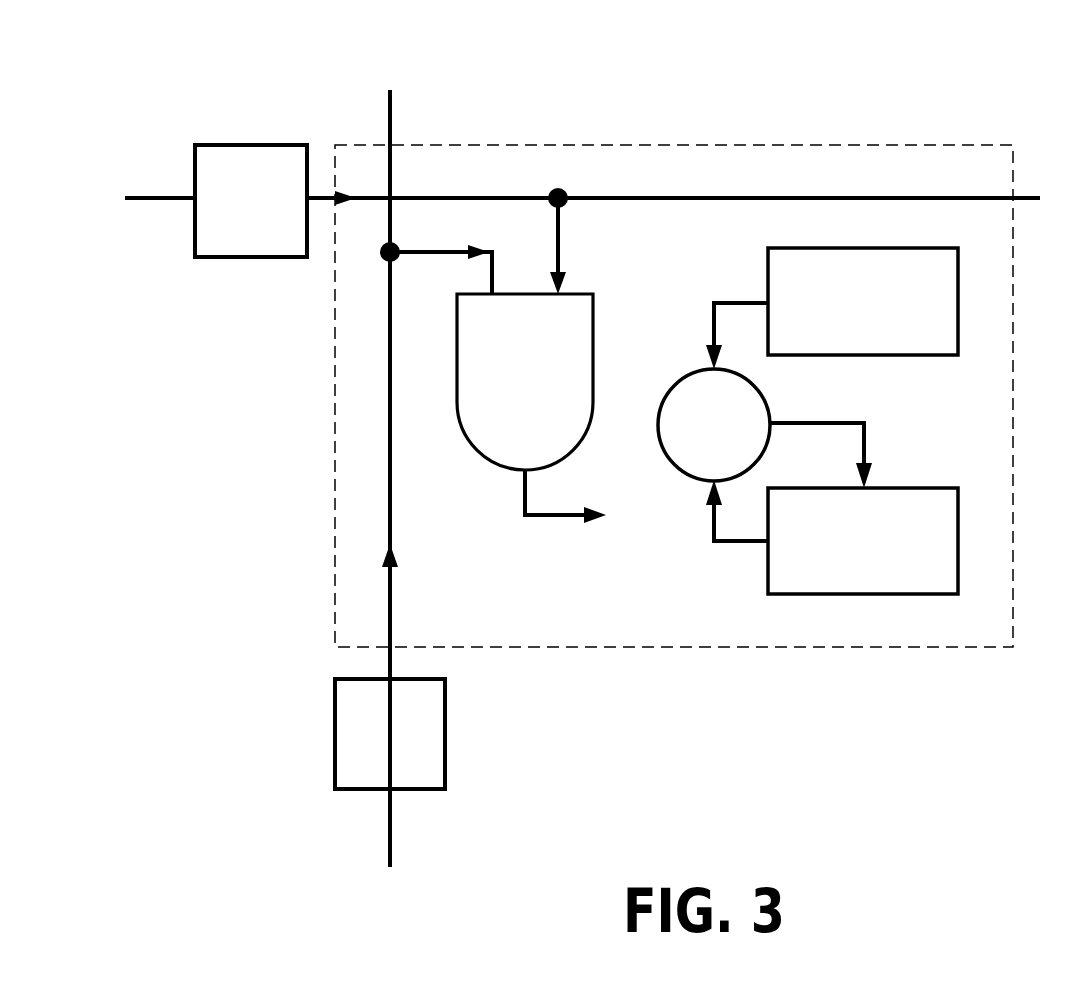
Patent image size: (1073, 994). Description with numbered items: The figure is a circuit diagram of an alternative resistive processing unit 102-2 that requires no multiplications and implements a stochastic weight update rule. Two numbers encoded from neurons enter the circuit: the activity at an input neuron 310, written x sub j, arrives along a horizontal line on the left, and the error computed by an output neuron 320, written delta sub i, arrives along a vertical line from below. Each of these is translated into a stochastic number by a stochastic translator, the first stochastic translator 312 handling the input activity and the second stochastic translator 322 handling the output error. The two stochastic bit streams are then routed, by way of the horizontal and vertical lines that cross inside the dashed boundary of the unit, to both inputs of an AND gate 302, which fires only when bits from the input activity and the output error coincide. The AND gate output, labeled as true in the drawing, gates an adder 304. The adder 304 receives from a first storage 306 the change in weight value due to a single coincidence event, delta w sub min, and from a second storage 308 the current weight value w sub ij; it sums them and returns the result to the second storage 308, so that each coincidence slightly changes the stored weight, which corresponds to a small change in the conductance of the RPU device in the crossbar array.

The resistive processing unit 102-2 is at (166, 45).
The activity at an input neuron 310 is at (162, 197).
The first stochastic translator 312 is at (268, 145).
The AND gate 302 is at (594, 294).
The adder 304 is at (690, 372).
The first storage 306 is at (768, 273).
The second storage 308 is at (768, 558).
The error computed by an output neuron 320 is at (390, 850).
The second stochastic translator 322 is at (445, 731).